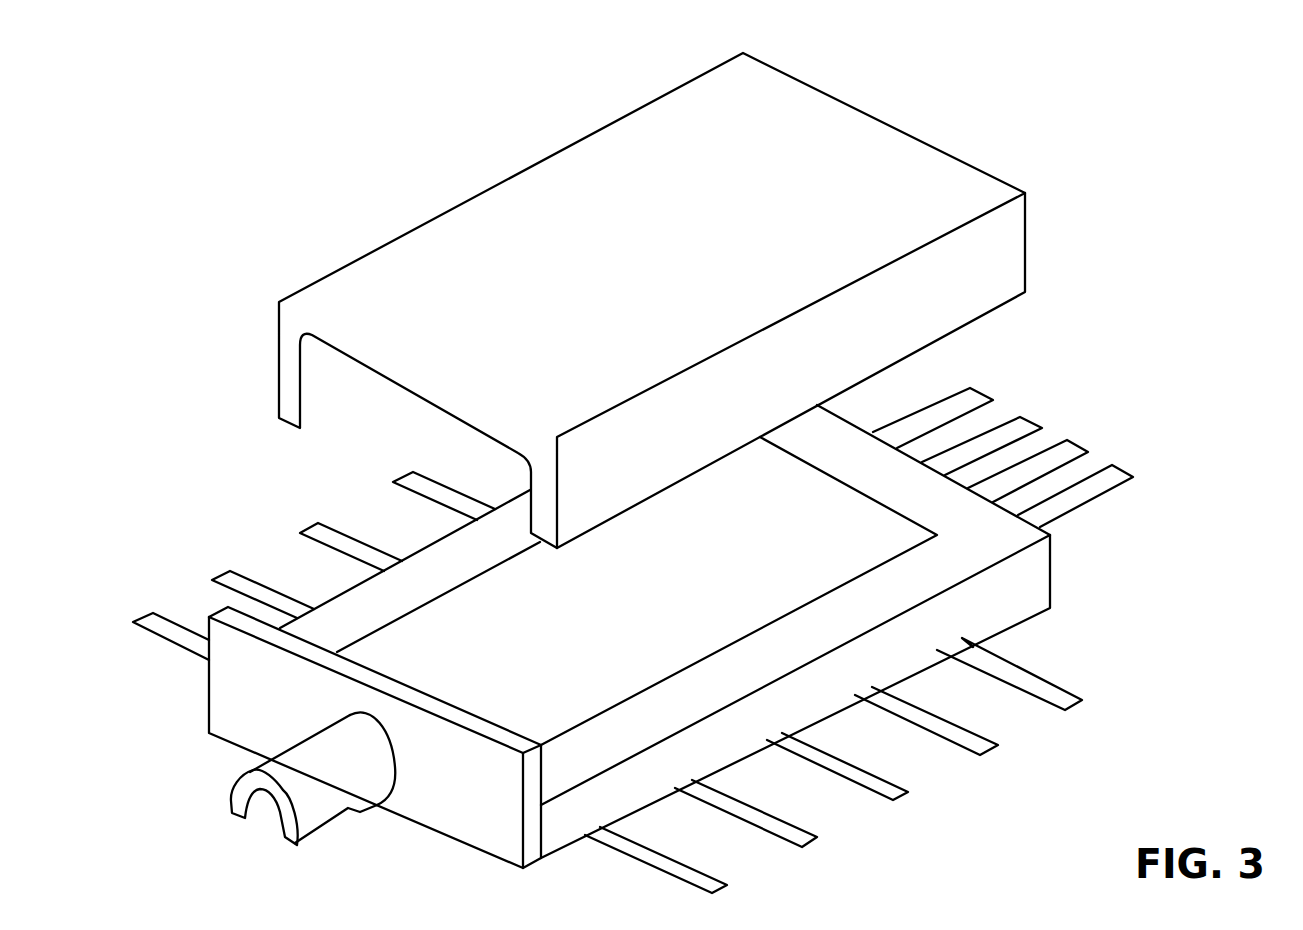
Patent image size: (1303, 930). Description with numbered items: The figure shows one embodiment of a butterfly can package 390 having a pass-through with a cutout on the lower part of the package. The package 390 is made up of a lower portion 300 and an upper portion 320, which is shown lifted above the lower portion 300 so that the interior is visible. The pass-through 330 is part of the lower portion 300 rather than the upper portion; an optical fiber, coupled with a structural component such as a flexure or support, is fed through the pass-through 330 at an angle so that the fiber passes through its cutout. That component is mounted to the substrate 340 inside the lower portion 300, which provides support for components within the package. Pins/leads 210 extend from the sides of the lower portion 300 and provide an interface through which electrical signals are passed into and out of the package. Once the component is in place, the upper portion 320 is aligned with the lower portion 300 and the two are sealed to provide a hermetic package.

The package 390 is at (1220, 146).
The upper portion 320 is at (850, 143).
The lower portion 300 is at (685, 586).
The substrate 340 is at (812, 495).
The pass-through 330 is at (238, 815).
The pins/leads 210 is at (975, 372).